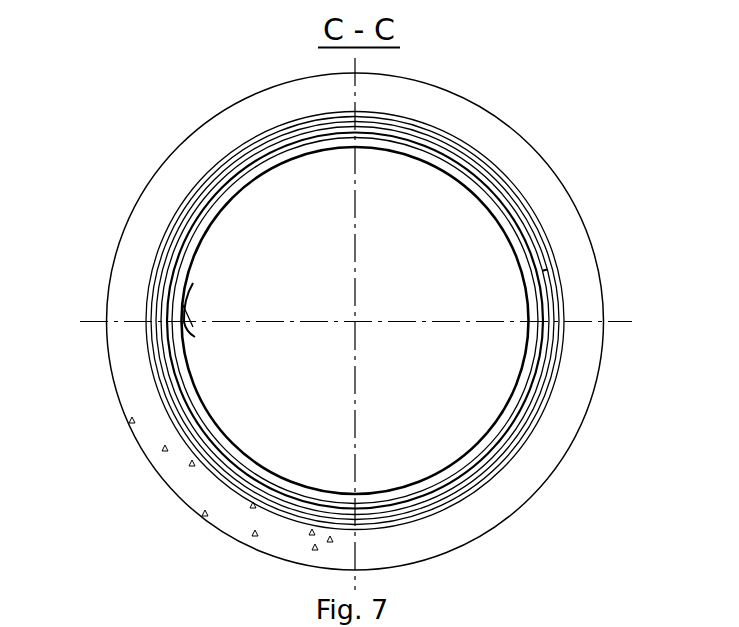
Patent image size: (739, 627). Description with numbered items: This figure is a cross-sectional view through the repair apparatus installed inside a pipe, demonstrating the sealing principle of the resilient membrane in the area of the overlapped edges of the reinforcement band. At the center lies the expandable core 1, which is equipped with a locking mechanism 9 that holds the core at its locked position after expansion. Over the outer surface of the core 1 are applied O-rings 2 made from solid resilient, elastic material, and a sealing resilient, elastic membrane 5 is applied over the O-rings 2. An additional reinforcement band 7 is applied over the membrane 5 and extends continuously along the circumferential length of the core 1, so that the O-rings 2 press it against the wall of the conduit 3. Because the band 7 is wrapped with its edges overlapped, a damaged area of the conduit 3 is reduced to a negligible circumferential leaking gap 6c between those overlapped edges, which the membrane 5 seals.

The expandable core 1 is at (413, 157).
The O-rings 2 is at (207, 419).
The conduit 3 is at (467, 527).
The sealing resilient, elastic membrane 5 is at (515, 227).
The leaking gap 6c is at (552, 273).
The reinforcement band 7 is at (555, 383).
The locking mechanism 9 is at (193, 328).